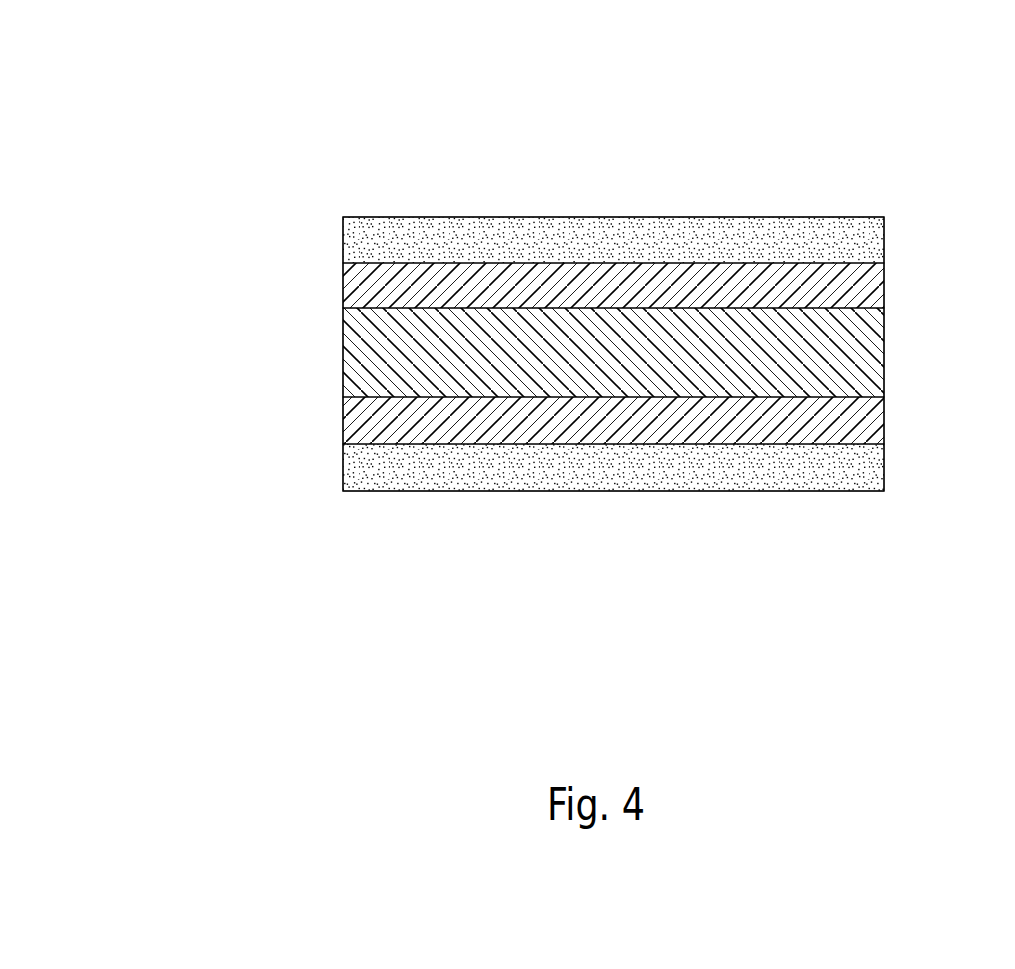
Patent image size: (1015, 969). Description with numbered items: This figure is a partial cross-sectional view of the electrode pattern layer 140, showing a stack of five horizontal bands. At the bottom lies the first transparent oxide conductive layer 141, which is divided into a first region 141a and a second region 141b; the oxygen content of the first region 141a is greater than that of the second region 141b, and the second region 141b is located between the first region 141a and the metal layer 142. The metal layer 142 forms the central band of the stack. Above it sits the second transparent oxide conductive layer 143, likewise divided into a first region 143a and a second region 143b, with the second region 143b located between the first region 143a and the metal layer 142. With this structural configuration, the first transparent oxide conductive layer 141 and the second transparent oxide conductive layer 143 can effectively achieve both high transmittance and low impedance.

The electrode pattern layer 140 is at (985, 97).
The first transparent oxide conductive layer 141 is at (262, 403).
The first region of the first transparent oxide conductive layer 141a is at (343, 468).
The second region of the first transparent oxide conductive layer 141b is at (343, 422).
The metal layer 142 is at (343, 350).
The second transparent oxide conductive layer 143 is at (262, 218).
The first region of the second transparent oxide conductive layer 143a is at (343, 237).
The second region of the second transparent oxide conductive layer 143b is at (343, 283).